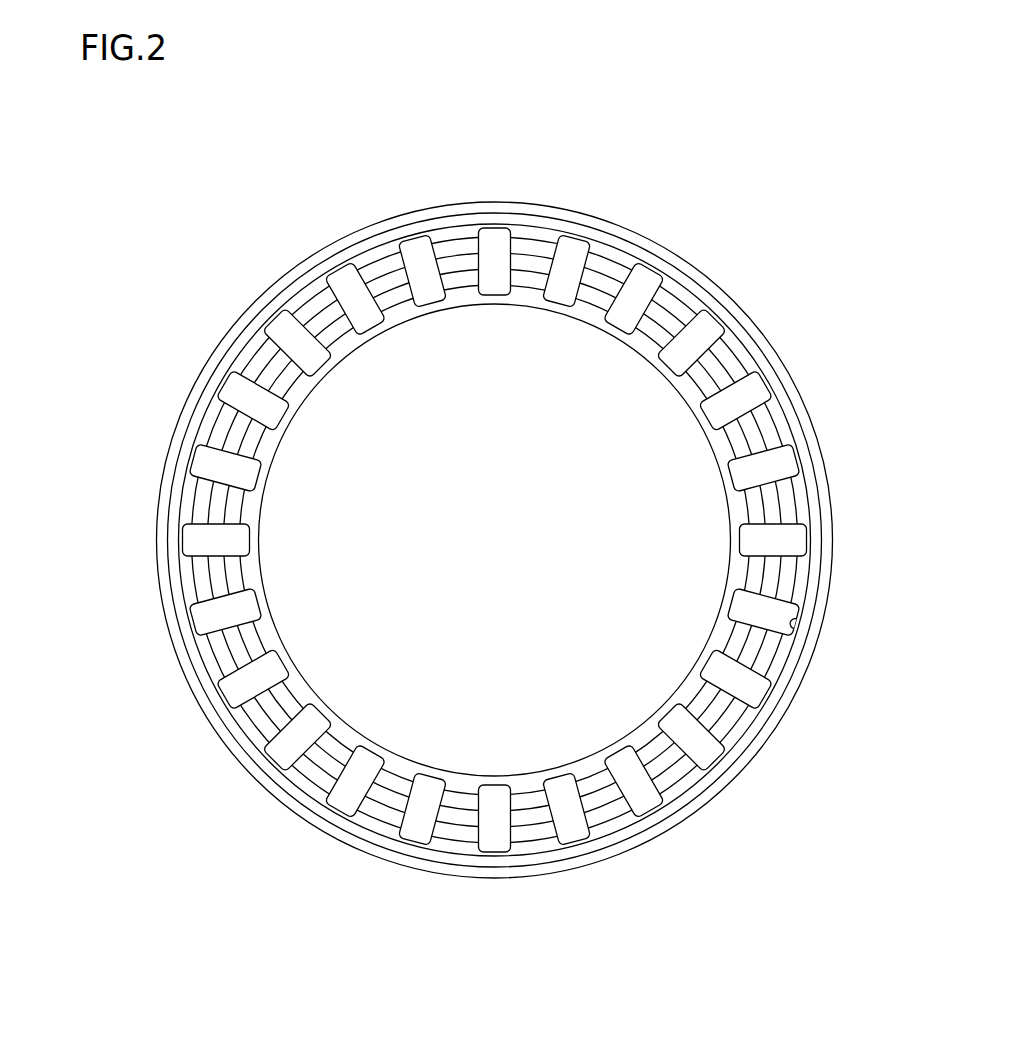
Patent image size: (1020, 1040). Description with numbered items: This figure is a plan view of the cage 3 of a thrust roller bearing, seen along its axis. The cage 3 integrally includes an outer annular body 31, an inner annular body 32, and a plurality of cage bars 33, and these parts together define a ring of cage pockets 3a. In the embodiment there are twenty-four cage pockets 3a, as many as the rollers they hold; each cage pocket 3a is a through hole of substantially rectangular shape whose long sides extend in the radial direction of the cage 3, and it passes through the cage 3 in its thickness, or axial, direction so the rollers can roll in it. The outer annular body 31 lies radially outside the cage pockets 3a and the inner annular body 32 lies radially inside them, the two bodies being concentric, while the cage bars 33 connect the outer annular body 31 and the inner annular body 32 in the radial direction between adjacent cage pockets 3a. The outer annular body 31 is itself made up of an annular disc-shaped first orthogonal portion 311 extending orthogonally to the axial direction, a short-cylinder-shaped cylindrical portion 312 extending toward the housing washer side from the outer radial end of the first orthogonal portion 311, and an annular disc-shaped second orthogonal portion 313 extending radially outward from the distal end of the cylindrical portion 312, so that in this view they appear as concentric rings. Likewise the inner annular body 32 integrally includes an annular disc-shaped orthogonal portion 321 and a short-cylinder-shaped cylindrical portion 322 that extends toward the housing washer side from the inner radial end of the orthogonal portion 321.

The cage 3 is at (244, 229).
The cage pocket 3a is at (793, 627).
The outer annular body 31 is at (758, 362).
The first orthogonal portion 311 is at (767, 380).
The cylindrical portion 312 is at (787, 398).
The second orthogonal portion 313 is at (803, 423).
The inner annular body 32 is at (652, 512).
The orthogonal portion 321 is at (738, 518).
The cylindrical portion 322 is at (730, 557).
The cage bar 33 is at (787, 573).